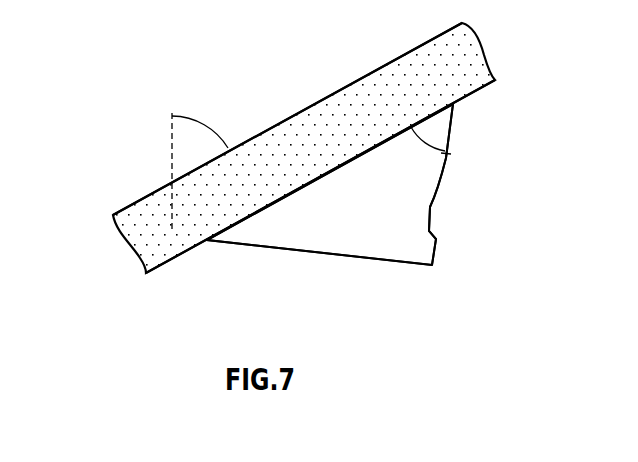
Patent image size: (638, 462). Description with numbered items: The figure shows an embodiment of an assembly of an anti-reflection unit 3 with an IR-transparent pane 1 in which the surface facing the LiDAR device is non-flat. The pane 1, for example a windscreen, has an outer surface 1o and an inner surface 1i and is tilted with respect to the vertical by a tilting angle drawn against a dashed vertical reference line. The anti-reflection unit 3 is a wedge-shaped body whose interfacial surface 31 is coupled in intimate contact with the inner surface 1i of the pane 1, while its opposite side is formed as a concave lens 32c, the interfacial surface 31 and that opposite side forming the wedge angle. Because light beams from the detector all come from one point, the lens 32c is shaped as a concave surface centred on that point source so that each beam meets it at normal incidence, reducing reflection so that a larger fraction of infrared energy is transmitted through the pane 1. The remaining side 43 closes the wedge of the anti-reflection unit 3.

The IR-transparent pane 1 is at (112, 232).
The outer surface of the pane 1o is at (127, 198).
The inner surface of the pane 1i is at (165, 261).
The anti-reflection unit 3 is at (380, 248).
The interfacial surface of the anti-reflection unit 31 is at (278, 202).
The lens 32c is at (430, 207).
The bottom surface 43 is at (215, 247).